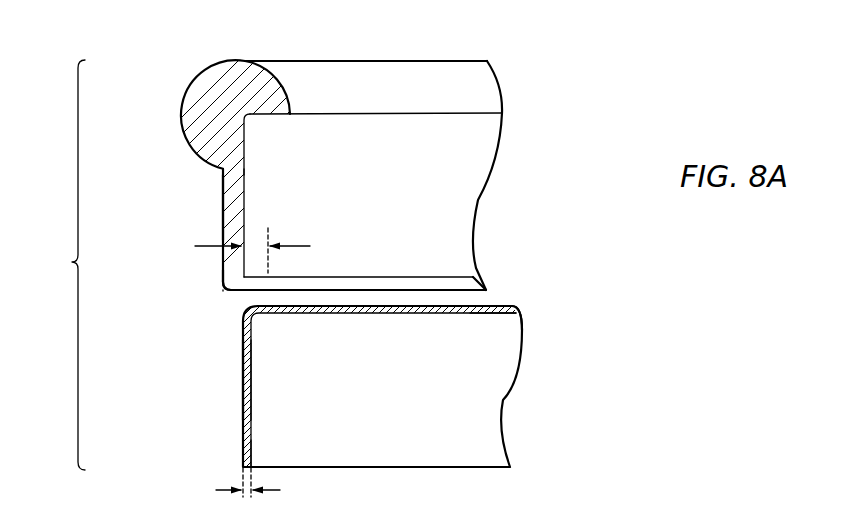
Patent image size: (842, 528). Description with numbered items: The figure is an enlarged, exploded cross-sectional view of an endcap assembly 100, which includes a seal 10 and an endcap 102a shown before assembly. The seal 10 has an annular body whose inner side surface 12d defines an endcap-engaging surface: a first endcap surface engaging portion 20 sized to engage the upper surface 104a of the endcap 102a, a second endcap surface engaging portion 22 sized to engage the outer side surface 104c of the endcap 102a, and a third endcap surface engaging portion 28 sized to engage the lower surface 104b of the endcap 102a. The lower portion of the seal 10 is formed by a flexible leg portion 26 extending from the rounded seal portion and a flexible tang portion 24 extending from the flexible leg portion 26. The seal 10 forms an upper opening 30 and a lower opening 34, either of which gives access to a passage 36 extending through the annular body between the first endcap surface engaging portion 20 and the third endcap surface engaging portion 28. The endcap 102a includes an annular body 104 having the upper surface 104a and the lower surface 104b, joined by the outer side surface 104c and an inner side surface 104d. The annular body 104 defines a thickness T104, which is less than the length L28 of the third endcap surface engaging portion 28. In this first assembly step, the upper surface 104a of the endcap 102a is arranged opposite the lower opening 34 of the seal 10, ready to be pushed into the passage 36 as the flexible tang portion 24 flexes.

The seal 10 is at (174, 81).
The inner side surface 12d is at (284, 112).
The first endcap surface engaging portion 20 is at (273, 117).
The second endcap surface engaging portion 22 is at (247, 163).
The flexible tang portion 24 is at (224, 293).
The flexible leg portion 26 is at (213, 194).
The third endcap surface engaging portion 28 is at (256, 273).
The length of the third endcap surface engaging portion L28 is at (234, 250).
The upper opening 30 is at (449, 106).
The lower opening 34 is at (324, 282).
The passage 36 is at (444, 170).
The endcap assembly 100 is at (60, 265).
The endcap 102a is at (206, 426).
The annular body 104 is at (470, 406).
The upper surface 104a is at (494, 305).
The lower surface 104b is at (470, 313).
The outer side surface 104c is at (246, 378).
The inner side surface 104d is at (252, 387).
The thickness of the annular body T104 is at (229, 486).